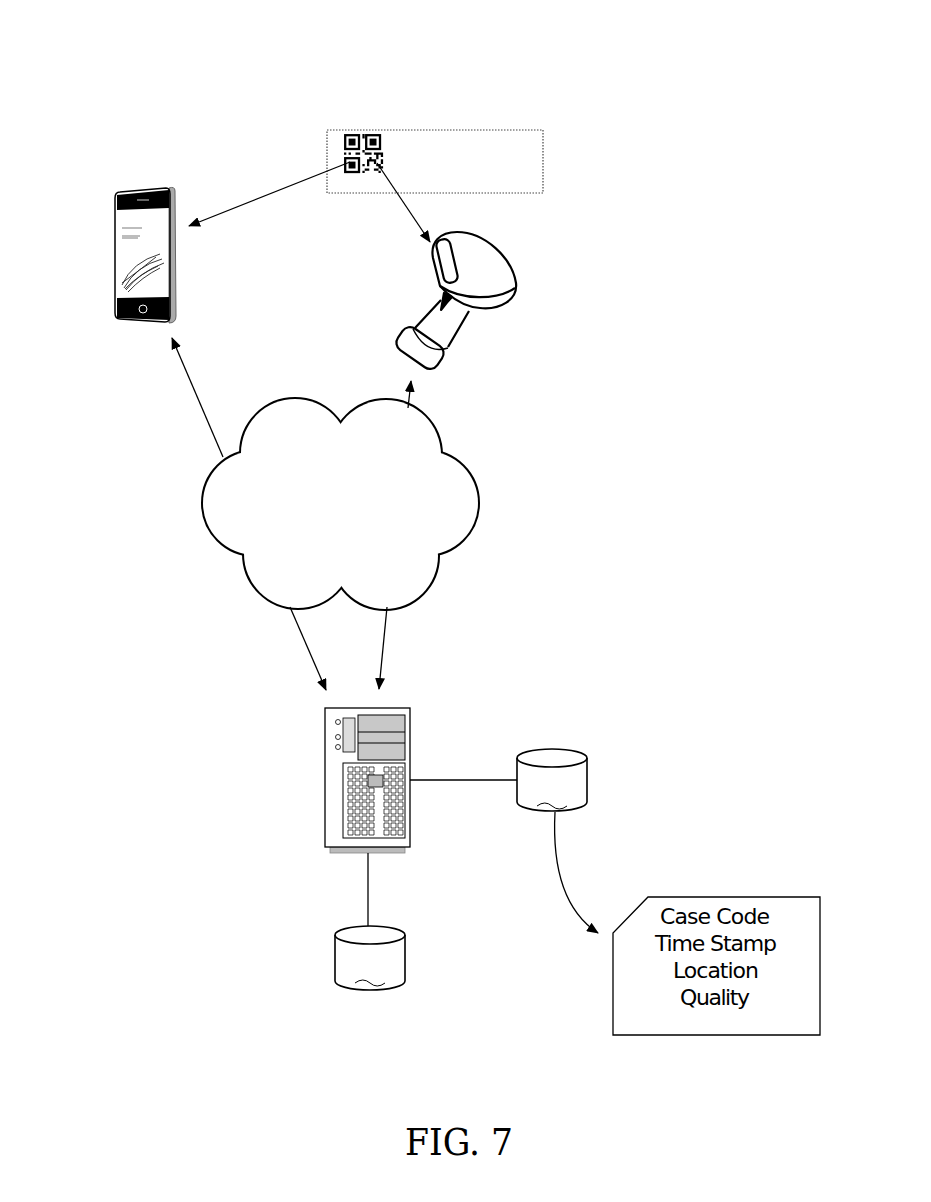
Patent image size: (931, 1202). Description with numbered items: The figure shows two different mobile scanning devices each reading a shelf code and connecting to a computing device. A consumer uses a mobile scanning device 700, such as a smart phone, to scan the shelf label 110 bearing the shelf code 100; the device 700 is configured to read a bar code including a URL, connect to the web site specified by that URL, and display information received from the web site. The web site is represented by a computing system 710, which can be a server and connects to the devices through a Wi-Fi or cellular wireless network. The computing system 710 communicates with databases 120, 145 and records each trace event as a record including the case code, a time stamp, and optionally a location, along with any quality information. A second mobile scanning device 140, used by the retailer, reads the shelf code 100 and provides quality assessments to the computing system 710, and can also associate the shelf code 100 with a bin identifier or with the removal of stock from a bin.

The shelf code 100 is at (362, 133).
The shelf label 110 is at (481, 129).
The mobile scanning device 700 is at (123, 190).
The mobile scanning device 140 is at (517, 288).
The computing system 710 is at (399, 708).
The database 145 is at (552, 780).
The database 120 is at (370, 958).